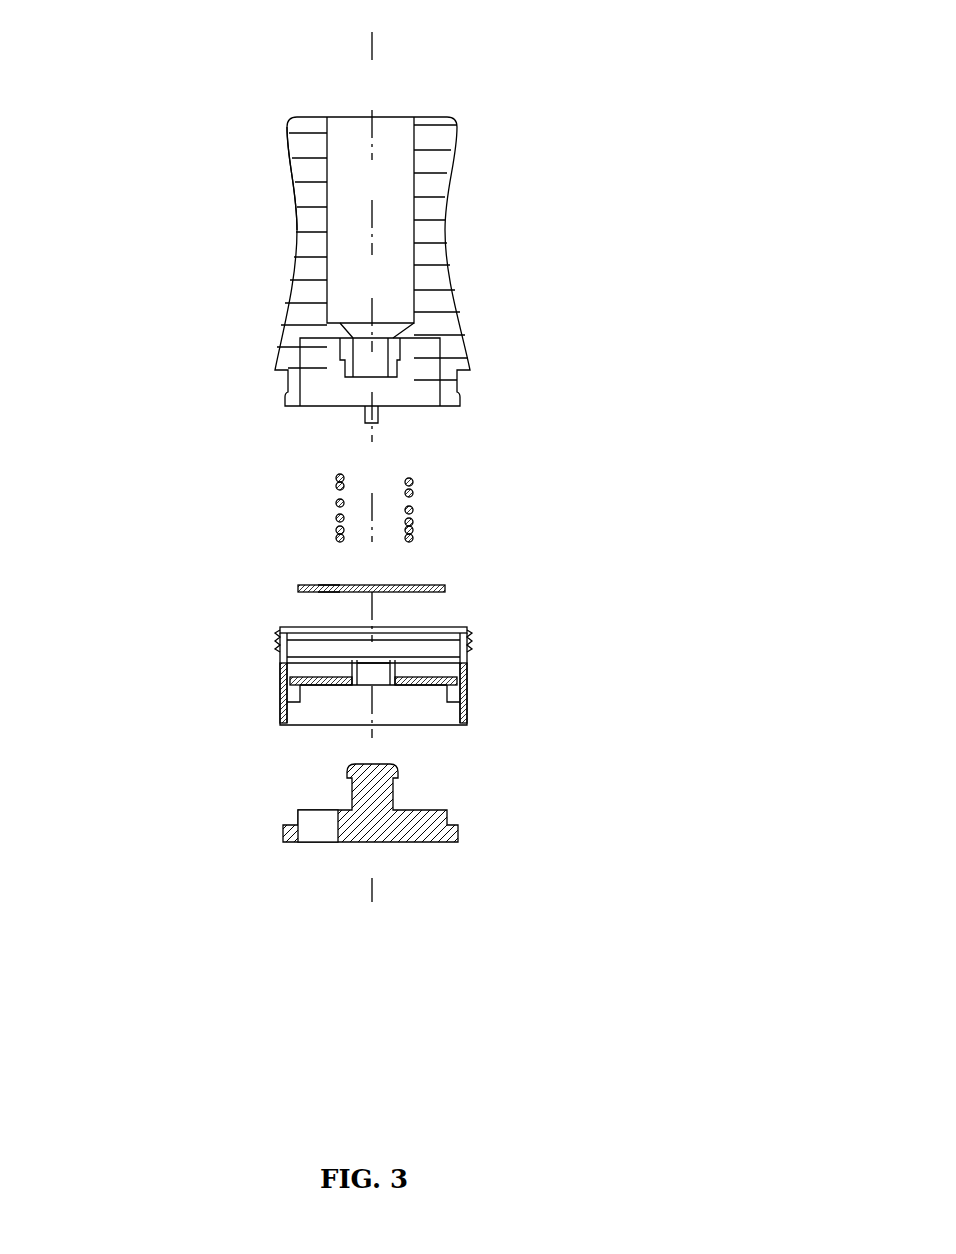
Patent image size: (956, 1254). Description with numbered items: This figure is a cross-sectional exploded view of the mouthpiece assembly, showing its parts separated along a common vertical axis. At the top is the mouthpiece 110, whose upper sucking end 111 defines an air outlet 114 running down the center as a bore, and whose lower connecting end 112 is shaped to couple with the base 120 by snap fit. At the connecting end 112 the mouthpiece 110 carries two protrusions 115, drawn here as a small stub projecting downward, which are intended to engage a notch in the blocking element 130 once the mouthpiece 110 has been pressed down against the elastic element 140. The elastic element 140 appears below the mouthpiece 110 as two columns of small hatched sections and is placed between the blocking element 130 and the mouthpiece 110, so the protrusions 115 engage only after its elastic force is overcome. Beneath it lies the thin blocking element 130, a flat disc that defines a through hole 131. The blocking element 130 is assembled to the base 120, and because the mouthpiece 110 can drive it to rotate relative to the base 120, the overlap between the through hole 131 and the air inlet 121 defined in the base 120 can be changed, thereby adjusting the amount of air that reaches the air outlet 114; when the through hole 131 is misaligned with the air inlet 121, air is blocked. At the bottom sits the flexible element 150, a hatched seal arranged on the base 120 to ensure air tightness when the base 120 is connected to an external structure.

The mouthpiece 110 is at (296, 258).
The sucking end 111 is at (288, 140).
The connecting end 112 is at (288, 392).
The air outlet 114 is at (388, 142).
The protrusions 115 is at (367, 424).
The base 120 is at (467, 675).
The air inlet 121 is at (327, 682).
The blocking element 130 is at (445, 585).
The through hole 131 is at (318, 585).
The elastic element 140 is at (413, 510).
The flexible element 150 is at (445, 845).